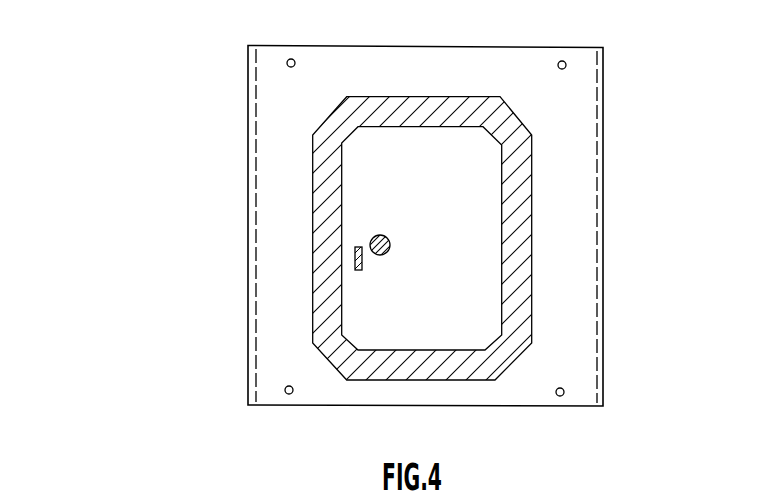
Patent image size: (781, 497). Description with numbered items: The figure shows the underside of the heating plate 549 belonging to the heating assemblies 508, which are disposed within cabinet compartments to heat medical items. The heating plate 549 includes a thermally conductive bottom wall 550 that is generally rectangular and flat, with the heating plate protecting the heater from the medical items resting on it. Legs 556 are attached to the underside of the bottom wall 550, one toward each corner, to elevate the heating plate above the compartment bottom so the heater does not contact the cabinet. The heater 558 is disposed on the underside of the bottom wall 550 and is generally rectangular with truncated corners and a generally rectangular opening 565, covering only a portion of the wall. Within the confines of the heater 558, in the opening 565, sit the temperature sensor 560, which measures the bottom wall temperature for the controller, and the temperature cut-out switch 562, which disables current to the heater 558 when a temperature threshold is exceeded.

The heating plate 549 is at (408, 251).
The bottom wall 550 is at (583, 265).
The legs 556 is at (562, 69).
The heater 558 is at (523, 335).
The temperature sensor 560 is at (358, 247).
The temperature cut-out switch 562 is at (390, 246).
The opening 565 is at (453, 328).
The heating assemblies 508 is at (718, 172).